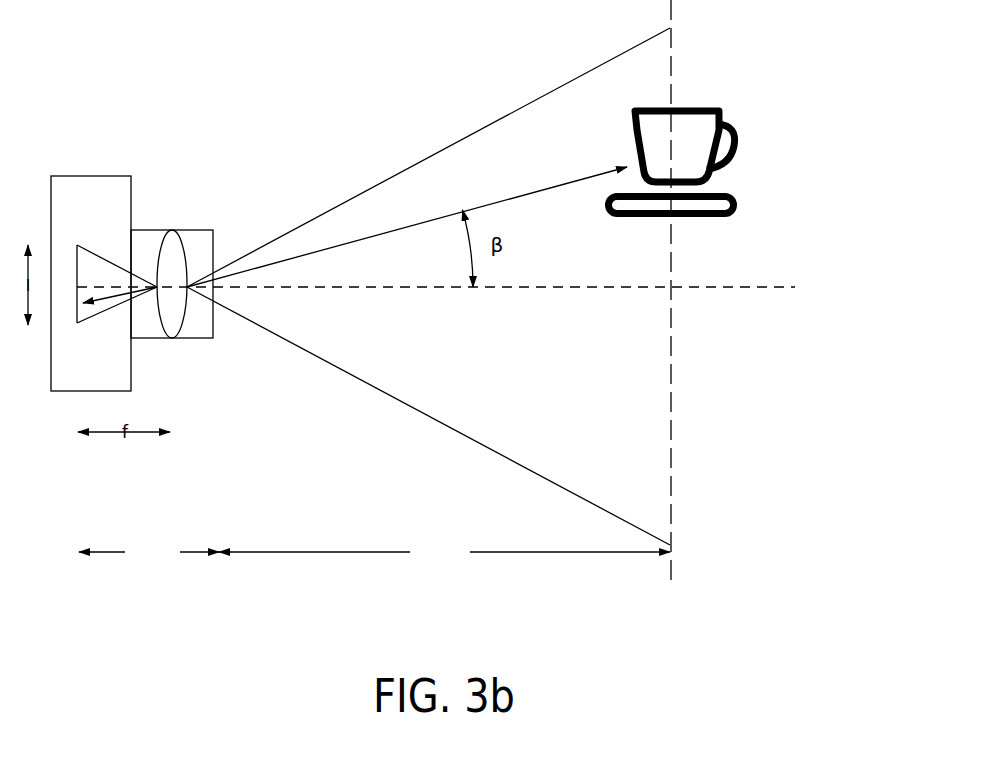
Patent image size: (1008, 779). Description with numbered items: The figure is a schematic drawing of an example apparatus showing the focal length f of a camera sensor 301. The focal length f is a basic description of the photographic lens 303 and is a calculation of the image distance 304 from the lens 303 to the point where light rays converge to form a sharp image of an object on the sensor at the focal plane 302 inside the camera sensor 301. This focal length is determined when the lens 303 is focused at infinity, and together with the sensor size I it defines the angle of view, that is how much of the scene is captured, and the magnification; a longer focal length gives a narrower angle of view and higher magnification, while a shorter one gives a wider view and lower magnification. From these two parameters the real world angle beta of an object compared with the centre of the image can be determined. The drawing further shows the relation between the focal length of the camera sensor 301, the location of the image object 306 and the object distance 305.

The camera sensor 301 is at (88, 176).
The focal plane 302 is at (77, 245).
The lens 303 is at (172, 231).
The image distance 304 is at (149, 552).
The object distance 305 is at (444, 553).
The image object 306 is at (685, 108).